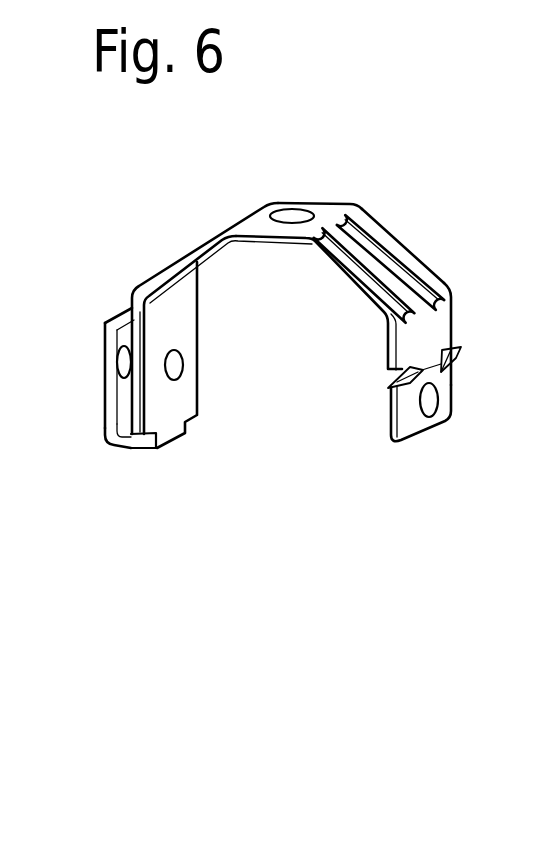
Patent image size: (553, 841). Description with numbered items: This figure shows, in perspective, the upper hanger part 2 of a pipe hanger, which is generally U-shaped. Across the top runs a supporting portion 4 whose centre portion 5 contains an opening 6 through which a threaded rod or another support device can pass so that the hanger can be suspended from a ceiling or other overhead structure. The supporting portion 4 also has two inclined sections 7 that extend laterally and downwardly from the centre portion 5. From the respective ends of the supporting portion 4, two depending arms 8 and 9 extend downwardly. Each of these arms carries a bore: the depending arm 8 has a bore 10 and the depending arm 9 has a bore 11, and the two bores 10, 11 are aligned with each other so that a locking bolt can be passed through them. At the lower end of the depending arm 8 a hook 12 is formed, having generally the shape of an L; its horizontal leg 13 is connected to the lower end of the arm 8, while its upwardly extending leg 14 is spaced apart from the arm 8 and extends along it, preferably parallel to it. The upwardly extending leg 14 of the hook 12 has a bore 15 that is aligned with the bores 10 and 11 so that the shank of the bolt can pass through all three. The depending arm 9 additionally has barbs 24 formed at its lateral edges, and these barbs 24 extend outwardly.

The upper hanger part 2 is at (191, 229).
The supporting portion 4 is at (288, 258).
The centre portion 5 is at (327, 213).
The opening 6 is at (296, 214).
The inclined sections 7 is at (209, 252).
The depending arm 8 is at (175, 398).
The depending arm 9 is at (422, 335).
The bore 10 is at (168, 366).
The bore 11 is at (425, 402).
The hook 12 is at (98, 437).
The horizontal leg 13 is at (133, 448).
The upwardly extending leg 14 is at (110, 382).
The bore 15 is at (127, 351).
The barbs 24 is at (458, 350).